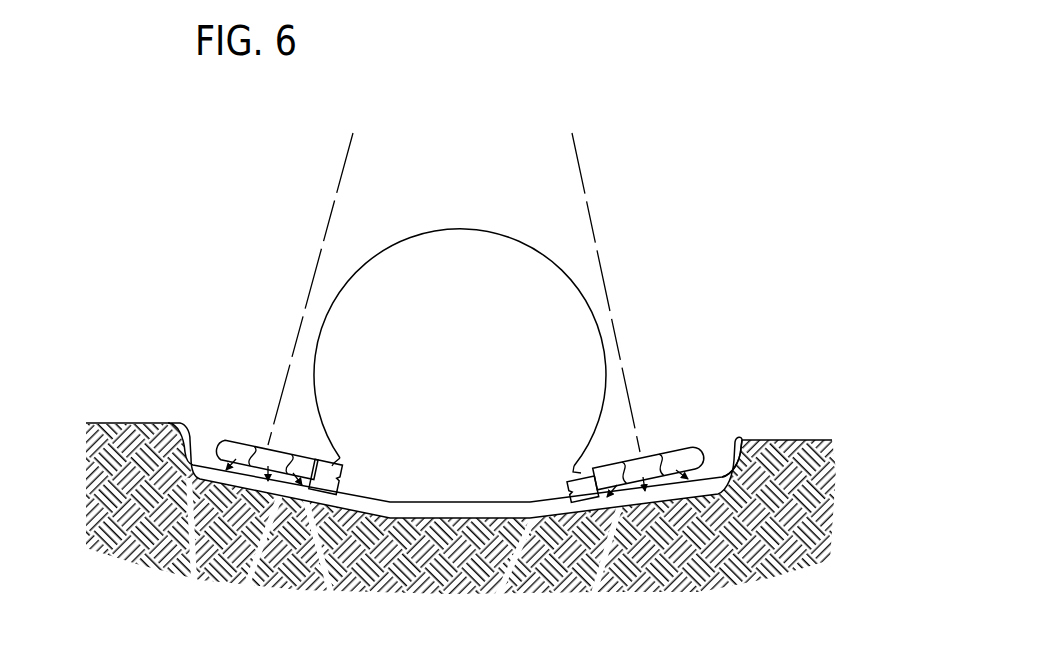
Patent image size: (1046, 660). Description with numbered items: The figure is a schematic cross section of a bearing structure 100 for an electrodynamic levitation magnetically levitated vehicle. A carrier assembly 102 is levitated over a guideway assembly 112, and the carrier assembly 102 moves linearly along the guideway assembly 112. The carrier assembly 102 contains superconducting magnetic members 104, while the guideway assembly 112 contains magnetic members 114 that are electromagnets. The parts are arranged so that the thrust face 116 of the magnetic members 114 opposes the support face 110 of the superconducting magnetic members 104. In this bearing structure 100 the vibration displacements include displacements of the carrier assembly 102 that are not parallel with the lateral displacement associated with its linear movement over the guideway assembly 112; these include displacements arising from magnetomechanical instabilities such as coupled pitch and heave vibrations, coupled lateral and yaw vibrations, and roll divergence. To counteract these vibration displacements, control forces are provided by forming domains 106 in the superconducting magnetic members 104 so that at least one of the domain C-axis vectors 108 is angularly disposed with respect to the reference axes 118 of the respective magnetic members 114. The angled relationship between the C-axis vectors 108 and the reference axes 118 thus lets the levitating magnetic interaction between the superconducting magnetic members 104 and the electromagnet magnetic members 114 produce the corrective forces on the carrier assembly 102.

The bearing structure 100 is at (660, 146).
The carrier assembly 102 is at (507, 250).
The superconducting magnetic members 104 is at (302, 486).
The domains 106 is at (250, 436).
The domain C-axis vectors 108 is at (290, 468).
The support face 110 is at (623, 495).
The guideway assembly 112 is at (189, 478).
The magnetic members 114 is at (697, 490).
The thrust face 116 is at (722, 476).
The reference axes 118 is at (330, 204).